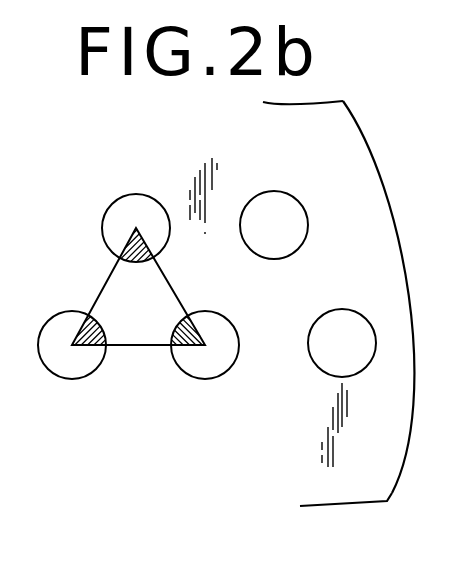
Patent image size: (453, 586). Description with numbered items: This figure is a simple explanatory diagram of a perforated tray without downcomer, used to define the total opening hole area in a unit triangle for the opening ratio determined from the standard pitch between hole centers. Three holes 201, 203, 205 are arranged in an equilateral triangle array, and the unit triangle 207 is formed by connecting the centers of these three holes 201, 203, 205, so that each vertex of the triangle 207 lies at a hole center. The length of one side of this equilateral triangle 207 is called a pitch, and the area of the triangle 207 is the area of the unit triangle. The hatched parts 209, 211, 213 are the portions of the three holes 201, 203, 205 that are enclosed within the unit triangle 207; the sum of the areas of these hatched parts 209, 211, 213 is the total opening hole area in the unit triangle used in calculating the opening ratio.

The hole 201 is at (138, 206).
The hole 203 is at (65, 319).
The hole 205 is at (233, 357).
The unit triangle 207 is at (177, 292).
The hatched part of hole 209 is at (128, 261).
The hatched part of hole 211 is at (108, 333).
The hatched part of hole 213 is at (183, 313).